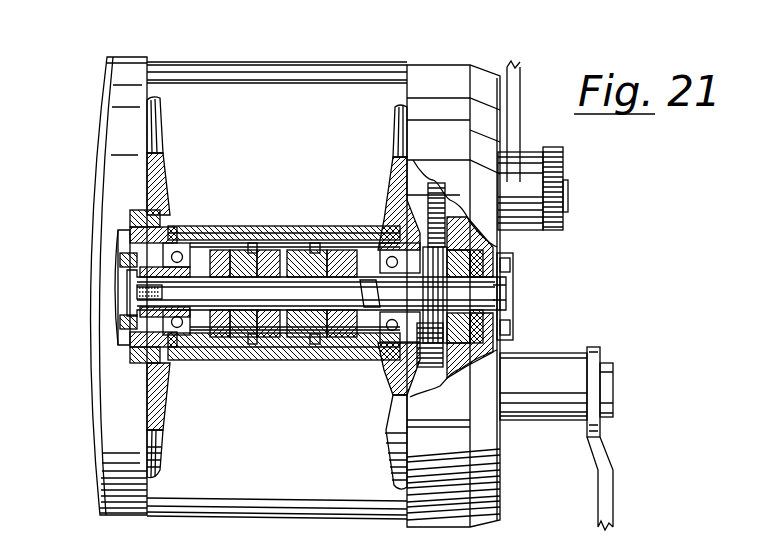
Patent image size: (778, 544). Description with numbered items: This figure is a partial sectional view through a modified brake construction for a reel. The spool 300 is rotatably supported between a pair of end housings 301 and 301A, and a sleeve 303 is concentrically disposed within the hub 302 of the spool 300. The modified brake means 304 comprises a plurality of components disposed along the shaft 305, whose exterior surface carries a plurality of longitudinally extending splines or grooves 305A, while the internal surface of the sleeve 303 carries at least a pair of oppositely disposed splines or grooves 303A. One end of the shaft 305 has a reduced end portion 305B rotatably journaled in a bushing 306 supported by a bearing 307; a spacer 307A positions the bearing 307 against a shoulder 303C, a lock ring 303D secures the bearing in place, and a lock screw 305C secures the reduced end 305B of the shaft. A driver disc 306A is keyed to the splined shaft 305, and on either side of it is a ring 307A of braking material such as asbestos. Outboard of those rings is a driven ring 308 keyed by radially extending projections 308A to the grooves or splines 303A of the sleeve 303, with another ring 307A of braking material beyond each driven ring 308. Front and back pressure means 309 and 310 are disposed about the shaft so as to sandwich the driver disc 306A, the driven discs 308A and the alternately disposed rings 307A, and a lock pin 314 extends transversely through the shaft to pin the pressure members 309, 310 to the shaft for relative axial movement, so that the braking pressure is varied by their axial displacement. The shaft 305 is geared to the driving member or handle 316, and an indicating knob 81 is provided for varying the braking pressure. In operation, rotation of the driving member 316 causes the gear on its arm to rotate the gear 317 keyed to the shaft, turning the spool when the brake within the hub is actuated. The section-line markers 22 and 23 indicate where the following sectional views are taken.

The end housing 301A is at (136, 62).
The end housing 301 is at (453, 76).
The indicating knob 81 is at (517, 125).
The driving member 316 is at (610, 487).
The spool 300 is at (165, 128).
The sleeve 303 is at (142, 407).
The splines or grooves 303A is at (368, 248).
The back pressure means 310 is at (340, 366).
The shoulder 303C is at (186, 226).
The lock ring 303D is at (147, 237).
The bearing 307 is at (140, 212).
The bushing 306 is at (163, 255).
The spacer / ring of braking material 307A is at (140, 272).
The reduced end portion 305B is at (125, 283).
The lock screw 305C is at (120, 294).
The shaft 305 is at (195, 337).
The splines or grooves 305A is at (290, 230).
The hub 302 is at (232, 226).
The front pressure means 309 is at (210, 348).
The brake means 304 is at (268, 236).
The driver disc 306A is at (283, 235).
The radially extending projections 308A is at (256, 234).
The driven ring 308 is at (262, 342).
The lock pin 314 is at (401, 390).
The gear 317 is at (478, 290).
The section line FIG. 22 is at (250, 207).
The section line FIG. 23 is at (292, 197).